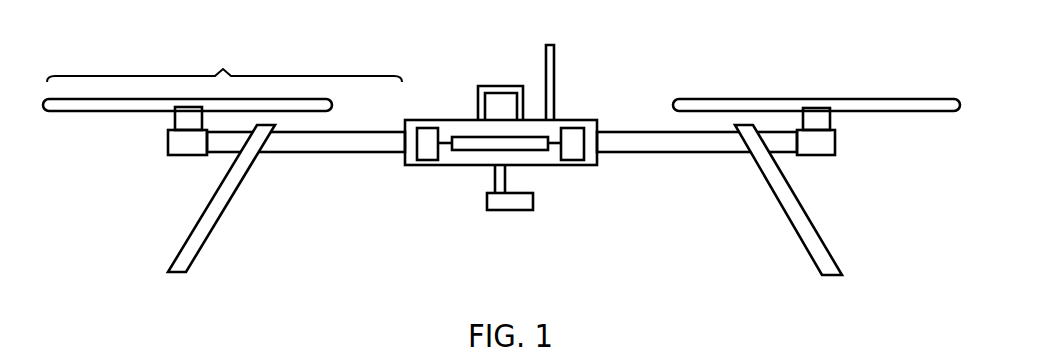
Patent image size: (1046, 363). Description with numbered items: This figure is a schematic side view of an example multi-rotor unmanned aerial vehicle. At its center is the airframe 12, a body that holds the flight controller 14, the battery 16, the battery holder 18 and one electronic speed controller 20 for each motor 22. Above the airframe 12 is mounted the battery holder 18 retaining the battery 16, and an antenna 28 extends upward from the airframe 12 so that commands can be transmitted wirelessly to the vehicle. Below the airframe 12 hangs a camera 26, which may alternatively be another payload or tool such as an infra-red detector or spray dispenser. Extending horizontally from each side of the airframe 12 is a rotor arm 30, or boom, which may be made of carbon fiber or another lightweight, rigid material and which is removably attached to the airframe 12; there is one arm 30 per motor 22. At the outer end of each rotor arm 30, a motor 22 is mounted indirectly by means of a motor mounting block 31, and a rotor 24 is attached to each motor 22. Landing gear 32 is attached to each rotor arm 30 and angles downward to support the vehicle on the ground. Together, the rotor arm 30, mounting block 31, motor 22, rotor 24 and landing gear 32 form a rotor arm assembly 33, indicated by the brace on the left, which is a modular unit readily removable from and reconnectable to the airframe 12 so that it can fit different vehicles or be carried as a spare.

The airframe 12 is at (450, 120).
The flight controller 14 is at (475, 153).
The battery 16 is at (495, 93).
The battery holder 18 is at (512, 86).
The electronic speed controller 20 is at (413, 160).
The motor 22 is at (173, 120).
The rotor 24 is at (100, 110).
The camera 26 is at (523, 210).
The antenna 28 is at (555, 72).
The rotor arm 30 is at (332, 152).
The motor mounting block 31 is at (185, 155).
The landing gear 32 is at (230, 205).
The rotor arm assembly 33 is at (224, 62).